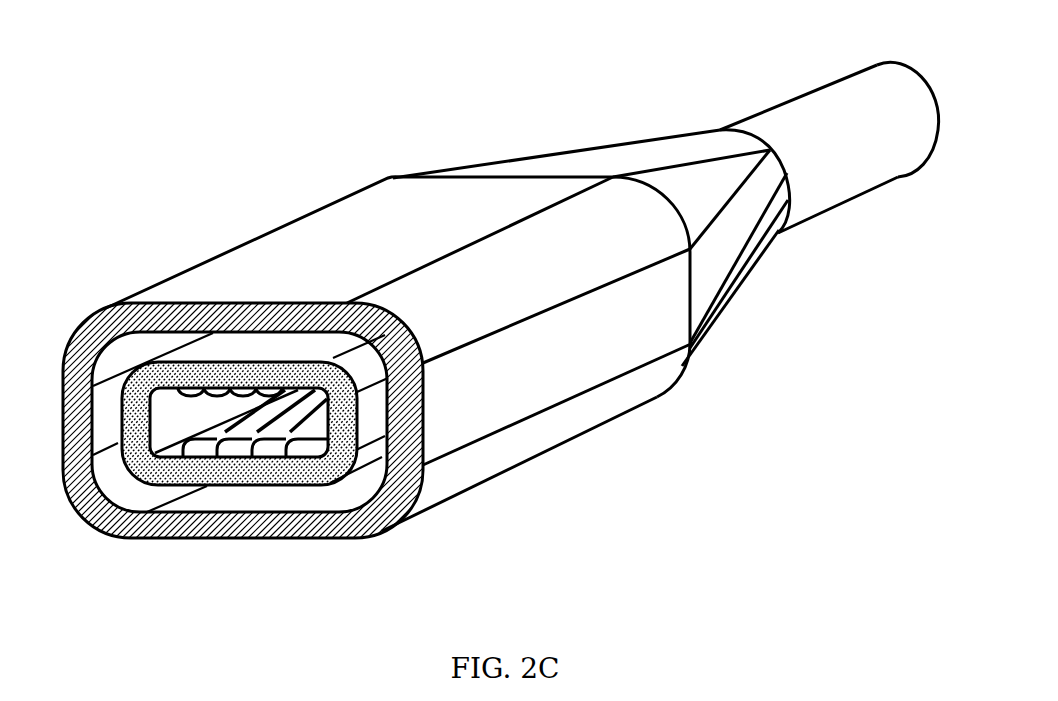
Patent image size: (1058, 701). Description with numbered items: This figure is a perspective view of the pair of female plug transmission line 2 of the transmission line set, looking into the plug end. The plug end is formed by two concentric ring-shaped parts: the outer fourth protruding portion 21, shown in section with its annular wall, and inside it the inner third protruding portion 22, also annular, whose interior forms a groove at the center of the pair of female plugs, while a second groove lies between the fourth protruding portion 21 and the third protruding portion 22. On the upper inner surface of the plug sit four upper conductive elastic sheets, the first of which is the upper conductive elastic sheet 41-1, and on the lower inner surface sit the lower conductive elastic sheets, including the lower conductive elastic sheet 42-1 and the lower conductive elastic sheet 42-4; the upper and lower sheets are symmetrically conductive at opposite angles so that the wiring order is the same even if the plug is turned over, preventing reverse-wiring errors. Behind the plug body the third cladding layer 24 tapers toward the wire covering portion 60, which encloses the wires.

The pair of female plug transmission line 2 is at (330, 82).
The fourth protruding portion 21 is at (290, 253).
The third protruding portion 22 is at (213, 487).
The third cladding layer 24 is at (630, 163).
The wire covering portion 60 is at (800, 113).
The upper conductive elastic sheet 41-1 is at (190, 393).
The lower conductive elastic sheet 42-1 is at (205, 438).
The lower conductive elastic sheet 42-4 is at (303, 440).